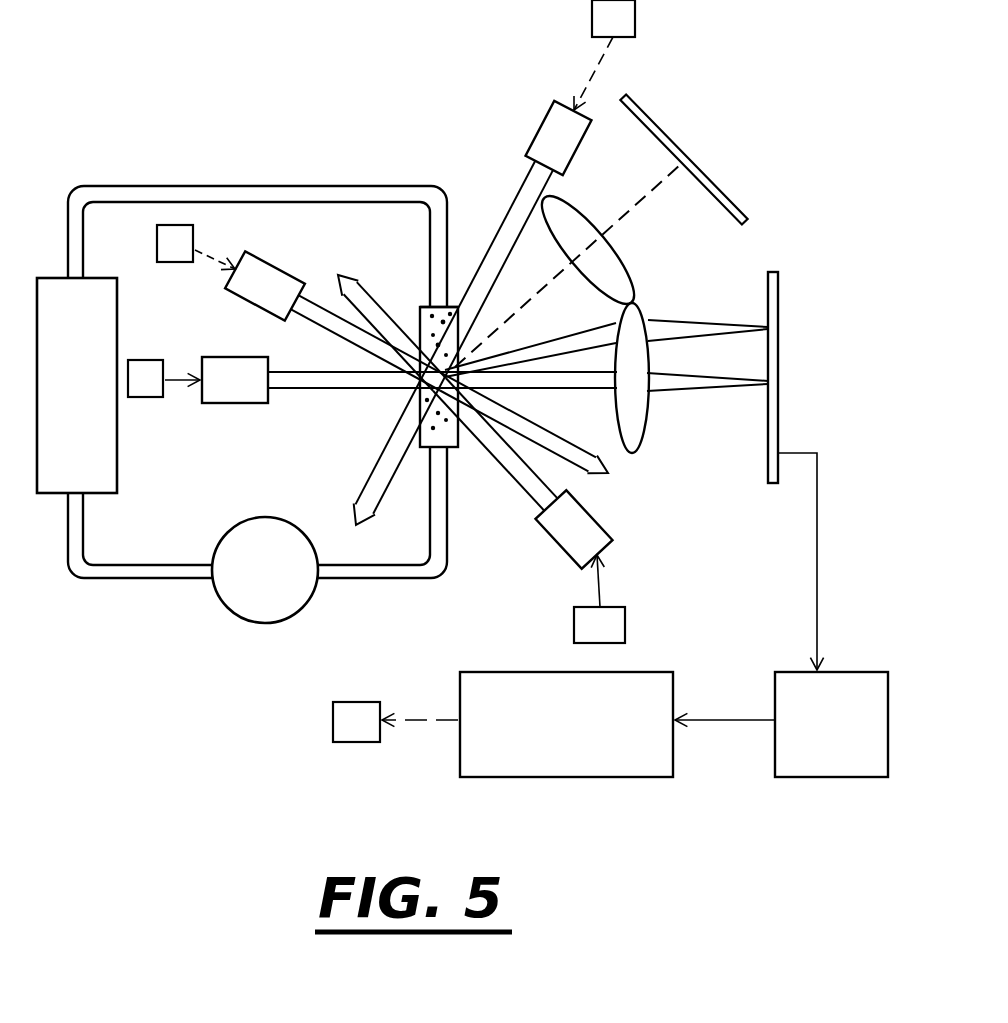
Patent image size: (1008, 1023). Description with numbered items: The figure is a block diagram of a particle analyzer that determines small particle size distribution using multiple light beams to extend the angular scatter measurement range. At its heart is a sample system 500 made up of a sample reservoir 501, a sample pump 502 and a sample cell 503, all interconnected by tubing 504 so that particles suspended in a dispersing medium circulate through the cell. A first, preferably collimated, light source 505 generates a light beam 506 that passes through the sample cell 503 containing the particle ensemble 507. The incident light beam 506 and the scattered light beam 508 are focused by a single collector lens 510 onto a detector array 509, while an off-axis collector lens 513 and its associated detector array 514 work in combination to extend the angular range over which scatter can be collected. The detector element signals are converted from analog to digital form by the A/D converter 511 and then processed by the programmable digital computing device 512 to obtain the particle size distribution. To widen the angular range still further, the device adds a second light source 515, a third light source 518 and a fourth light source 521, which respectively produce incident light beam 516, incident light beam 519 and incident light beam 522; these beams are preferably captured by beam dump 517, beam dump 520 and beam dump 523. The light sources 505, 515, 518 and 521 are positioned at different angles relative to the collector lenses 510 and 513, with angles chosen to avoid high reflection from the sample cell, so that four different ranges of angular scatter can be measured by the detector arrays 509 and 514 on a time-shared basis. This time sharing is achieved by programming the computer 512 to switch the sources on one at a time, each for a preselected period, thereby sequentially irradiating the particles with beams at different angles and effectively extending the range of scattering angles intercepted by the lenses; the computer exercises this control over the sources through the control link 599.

The sample system 500 is at (174, 182).
The sample reservoir 501 is at (118, 477).
The sample pump 502 is at (232, 612).
The sample cell 503 is at (458, 448).
The tubing 504 is at (233, 185).
The light source 505 is at (227, 404).
The light beam 506 is at (380, 392).
The particle ensemble 507 is at (408, 310).
The scattered light beam 508 is at (600, 325).
The detector array 509 is at (767, 477).
The collector lens 510 is at (638, 312).
The A/D converter 511 is at (800, 778).
The programmable digital computing device 512 is at (542, 778).
The off-axis collector lens 513 is at (615, 254).
The detector array 514 is at (653, 117).
The second light source 515 is at (285, 268).
The incident light beam 516 is at (318, 330).
The beam dump 517 is at (608, 476).
The third light source 518 is at (612, 527).
The incident light beam 519 is at (527, 497).
The beam dump 520 is at (345, 262).
The fourth light source 521 is at (542, 128).
The incident light beam 522 is at (518, 195).
The beam dump 523 is at (352, 512).
The control link 599 is at (203, 250).